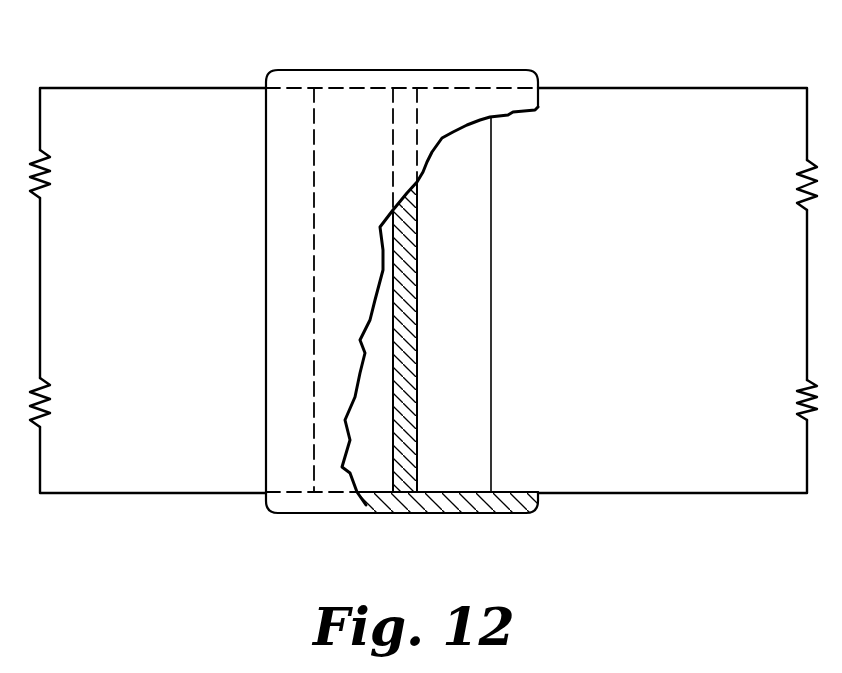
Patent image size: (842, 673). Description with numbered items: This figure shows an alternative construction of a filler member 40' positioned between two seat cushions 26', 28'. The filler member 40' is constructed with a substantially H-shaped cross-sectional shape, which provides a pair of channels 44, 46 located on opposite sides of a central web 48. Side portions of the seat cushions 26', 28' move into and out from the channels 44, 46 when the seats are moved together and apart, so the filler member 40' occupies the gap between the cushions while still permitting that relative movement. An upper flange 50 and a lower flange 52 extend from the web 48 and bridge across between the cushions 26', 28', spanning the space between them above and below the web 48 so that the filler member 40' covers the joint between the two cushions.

The seat cushion 26' is at (148, 258).
The seat cushion 28' is at (677, 258).
The filler member 40' is at (402, 261).
The upper flange 50 is at (453, 69).
The channel 46 is at (472, 253).
The web 48 is at (413, 352).
The channel 44 is at (372, 468).
The lower flange 52 is at (478, 513).